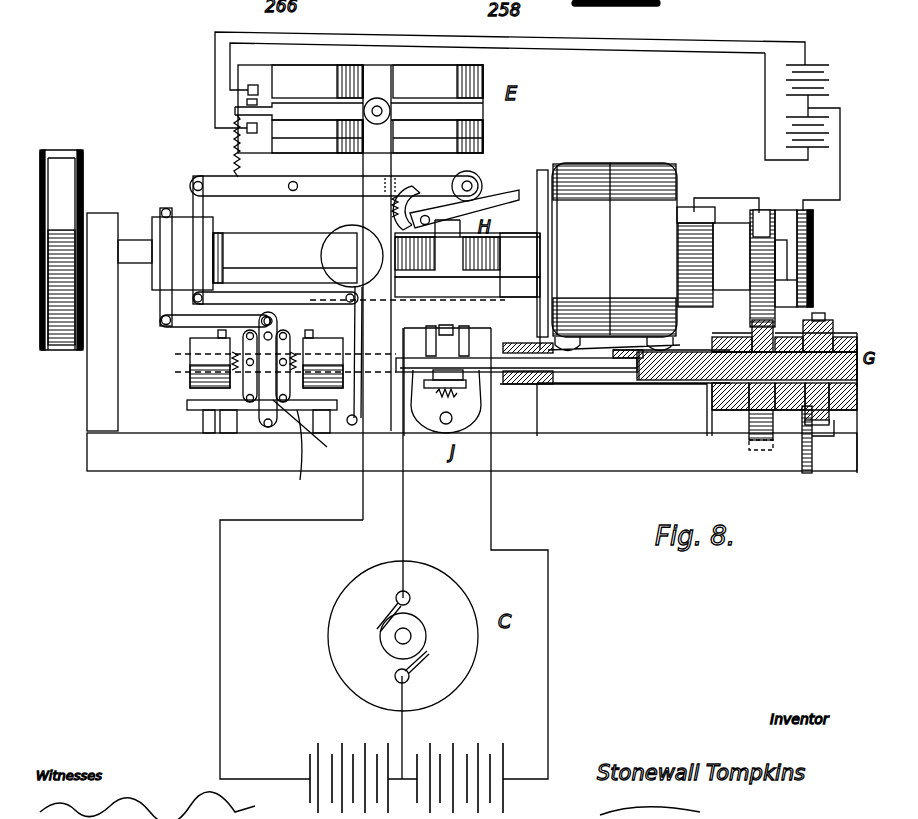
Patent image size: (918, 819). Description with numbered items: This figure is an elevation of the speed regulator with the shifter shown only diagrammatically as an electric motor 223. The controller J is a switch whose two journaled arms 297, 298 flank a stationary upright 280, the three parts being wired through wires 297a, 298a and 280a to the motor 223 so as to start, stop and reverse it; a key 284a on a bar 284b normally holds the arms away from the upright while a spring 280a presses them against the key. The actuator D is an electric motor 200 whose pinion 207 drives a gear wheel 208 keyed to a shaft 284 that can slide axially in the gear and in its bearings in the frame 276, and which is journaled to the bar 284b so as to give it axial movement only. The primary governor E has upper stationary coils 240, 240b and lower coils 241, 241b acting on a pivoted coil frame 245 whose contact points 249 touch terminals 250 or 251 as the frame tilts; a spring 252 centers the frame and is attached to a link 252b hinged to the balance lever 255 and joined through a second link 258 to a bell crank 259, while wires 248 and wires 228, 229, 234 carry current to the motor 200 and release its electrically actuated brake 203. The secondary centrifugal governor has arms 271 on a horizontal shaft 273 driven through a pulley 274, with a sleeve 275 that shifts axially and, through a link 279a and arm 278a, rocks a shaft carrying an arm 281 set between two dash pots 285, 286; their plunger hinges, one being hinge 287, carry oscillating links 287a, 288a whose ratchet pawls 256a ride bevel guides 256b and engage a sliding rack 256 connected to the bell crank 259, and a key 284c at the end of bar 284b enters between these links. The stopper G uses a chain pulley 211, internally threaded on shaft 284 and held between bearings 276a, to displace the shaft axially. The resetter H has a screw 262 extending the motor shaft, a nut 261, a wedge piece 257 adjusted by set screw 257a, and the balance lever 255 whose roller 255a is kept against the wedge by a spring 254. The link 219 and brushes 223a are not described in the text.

The electric motor 200 is at (614, 257).
The electrically actuated brake 203 is at (790, 257).
The pinion 207 is at (762, 213).
The gear wheel 208 is at (762, 300).
The chain pulley 211 is at (828, 325).
The link 219 is at (160, 300).
The electric motor 223 is at (453, 666).
The brushes 223a is at (397, 636).
The wire 228 is at (705, 50).
The wire 229 is at (808, 36).
The wire 234 is at (840, 145).
The upper stationary coil 240 is at (317, 81).
The upper stationary coil 240b is at (438, 81).
The lower stationary coil 241 is at (295, 145).
The lower stationary coil 241b is at (484, 130).
The coil frame 245 is at (366, 65).
The wires 248 is at (560, 168).
The contact points 249 is at (247, 102).
The terminal 250 is at (248, 90).
The terminal 251 is at (247, 128).
The spring 252 is at (233, 157).
The link 252b is at (280, 187).
The spring 254 is at (352, 256).
The balance lever 255 is at (488, 176).
The roller 255a is at (440, 172).
The sliding rack 256 is at (247, 418).
The ratchet pawls 256a is at (220, 430).
The guides 256b is at (200, 426).
The wedge piece 257 is at (471, 201).
The set screw 257a is at (422, 224).
The second link 258 is at (193, 198).
The bell crank 259 is at (358, 326).
The nut 261 is at (490, 281).
The screw 262 is at (487, 250).
The governor arms 271 is at (297, 247).
The horizontal shaft 273 is at (135, 243).
The pulley 274 is at (85, 145).
The sleeve 275 is at (215, 233).
The frame 276 is at (97, 448).
The bearings 276a is at (844, 420).
The arm 278a is at (280, 318).
The link 279a is at (225, 318).
The stationary upright 280 is at (448, 323).
The wire 280a is at (459, 396).
The arm 281 is at (300, 463).
The shaft 284 is at (672, 378).
The key 284a is at (459, 386).
The bar 284b is at (533, 385).
The key 284c is at (190, 333).
The dash pot 285 is at (190, 352).
The dash pot 286 is at (315, 350).
The hinge 287 is at (259, 365).
The oscillating link 287a is at (243, 385).
The oscillating link 288a is at (321, 433).
The journaled arm 297 is at (430, 330).
The wire 297a is at (265, 522).
The journaled arm 298 is at (470, 328).
The wire 298a is at (519, 553).